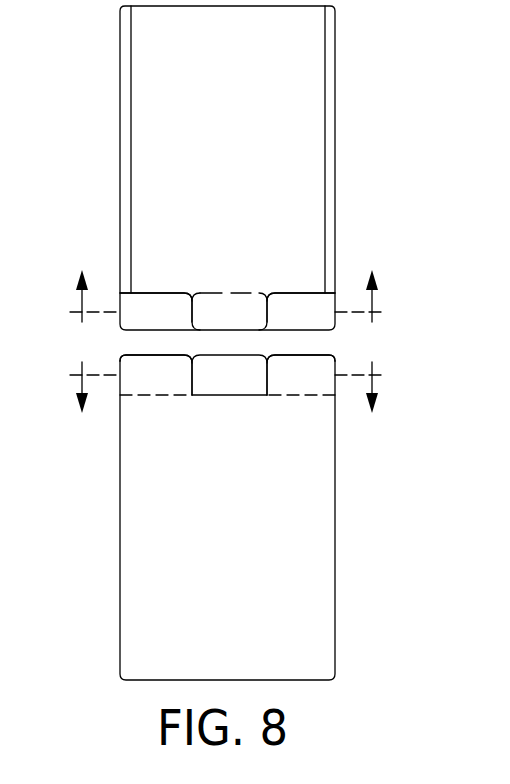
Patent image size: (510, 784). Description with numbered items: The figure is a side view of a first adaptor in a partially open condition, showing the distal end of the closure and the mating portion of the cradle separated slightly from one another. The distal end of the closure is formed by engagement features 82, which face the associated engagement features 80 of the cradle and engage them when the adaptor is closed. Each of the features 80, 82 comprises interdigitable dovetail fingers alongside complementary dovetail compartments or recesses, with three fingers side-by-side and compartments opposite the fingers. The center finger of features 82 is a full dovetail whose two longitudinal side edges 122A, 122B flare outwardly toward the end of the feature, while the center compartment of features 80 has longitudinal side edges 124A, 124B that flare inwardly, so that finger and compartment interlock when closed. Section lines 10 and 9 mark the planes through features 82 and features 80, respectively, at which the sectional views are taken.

The engagement features of the cradle 80 is at (228, 427).
The engagement features of the closure 82 is at (228, 263).
The longitudinal side edge of center finger 122A is at (266, 307).
The longitudinal side edge of center finger 122B is at (191, 316).
The longitudinal side edge of center compartment 124A is at (263, 396).
The longitudinal side edge of center compartment 124B is at (195, 396).
The section line 10- 10 is at (223, 303).
The section line 9- 9 is at (223, 384).